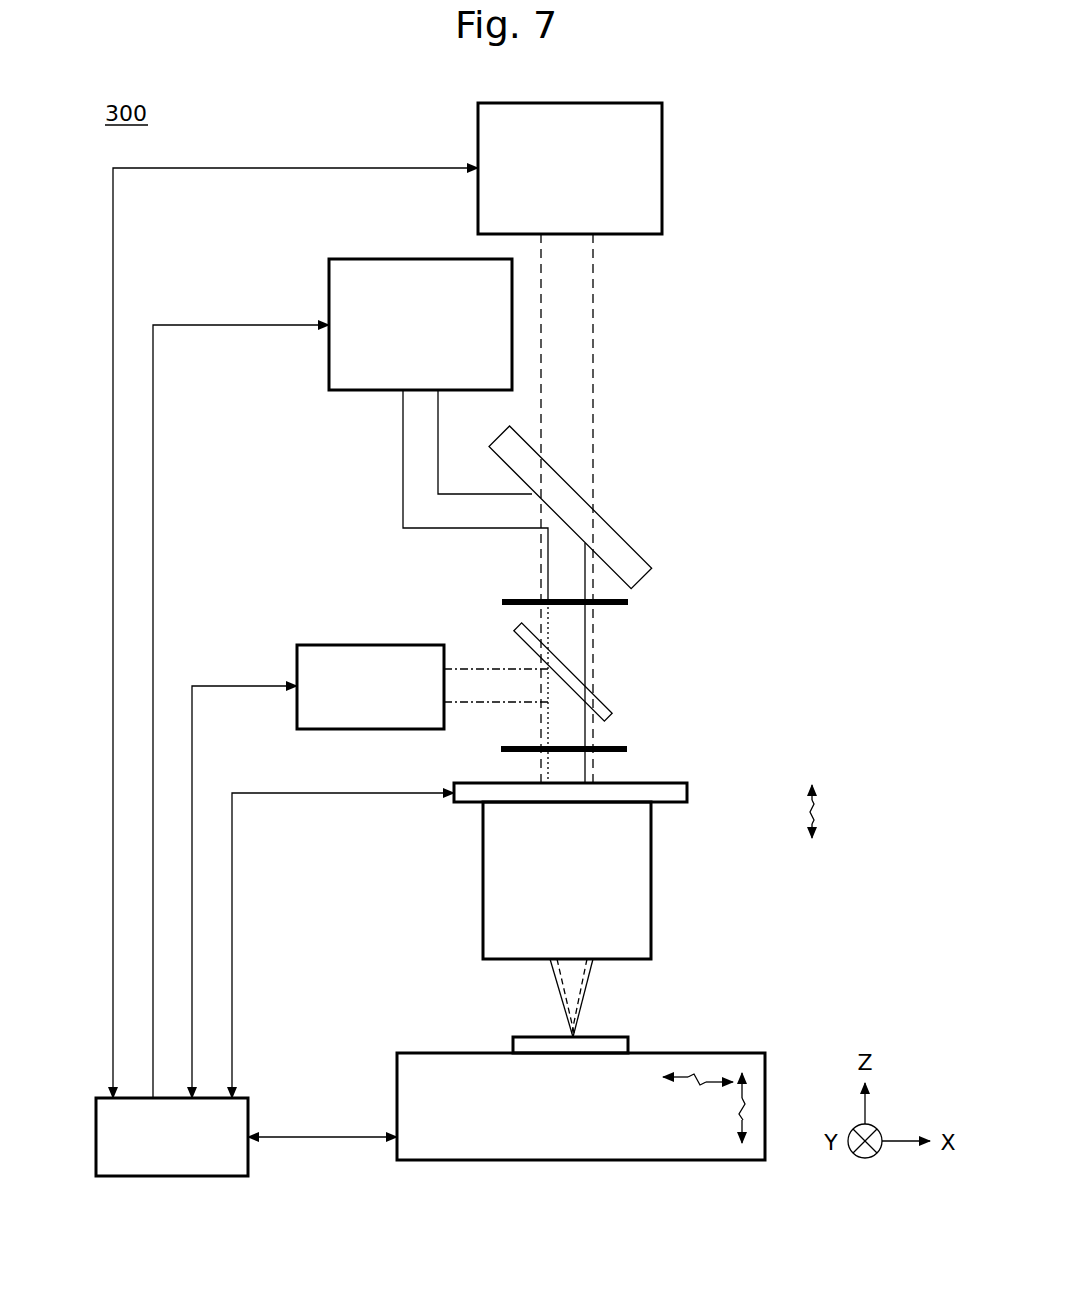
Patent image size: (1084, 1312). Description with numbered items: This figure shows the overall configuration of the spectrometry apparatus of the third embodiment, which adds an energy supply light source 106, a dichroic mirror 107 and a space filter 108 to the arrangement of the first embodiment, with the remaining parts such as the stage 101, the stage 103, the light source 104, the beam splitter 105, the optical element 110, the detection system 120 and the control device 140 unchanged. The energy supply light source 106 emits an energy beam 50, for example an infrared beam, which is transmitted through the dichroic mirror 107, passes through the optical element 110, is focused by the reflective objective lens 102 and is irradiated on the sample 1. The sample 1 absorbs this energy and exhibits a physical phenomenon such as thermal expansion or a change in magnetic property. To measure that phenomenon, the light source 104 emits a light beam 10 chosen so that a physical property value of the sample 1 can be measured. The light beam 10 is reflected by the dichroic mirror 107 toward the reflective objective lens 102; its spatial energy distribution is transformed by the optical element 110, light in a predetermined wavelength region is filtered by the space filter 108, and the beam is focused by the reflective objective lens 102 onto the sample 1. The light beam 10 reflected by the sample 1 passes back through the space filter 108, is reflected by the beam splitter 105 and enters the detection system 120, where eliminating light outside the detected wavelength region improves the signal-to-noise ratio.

The energy supply light source 106 is at (662, 126).
The light source 104 is at (329, 268).
The energy beam 50 is at (593, 340).
The light beam 10 is at (413, 448).
The dichroic mirror 107 is at (630, 547).
The optical element 110 is at (502, 600).
The detection system 120 is at (313, 645).
The beam splitter 105 is at (604, 700).
The space filter 108 is at (627, 749).
The stage 103 is at (687, 792).
The reflective objective lens 102 is at (651, 906).
The sample 1 is at (622, 1035).
The stage 101 is at (397, 1068).
The control device 140 is at (100, 1097).